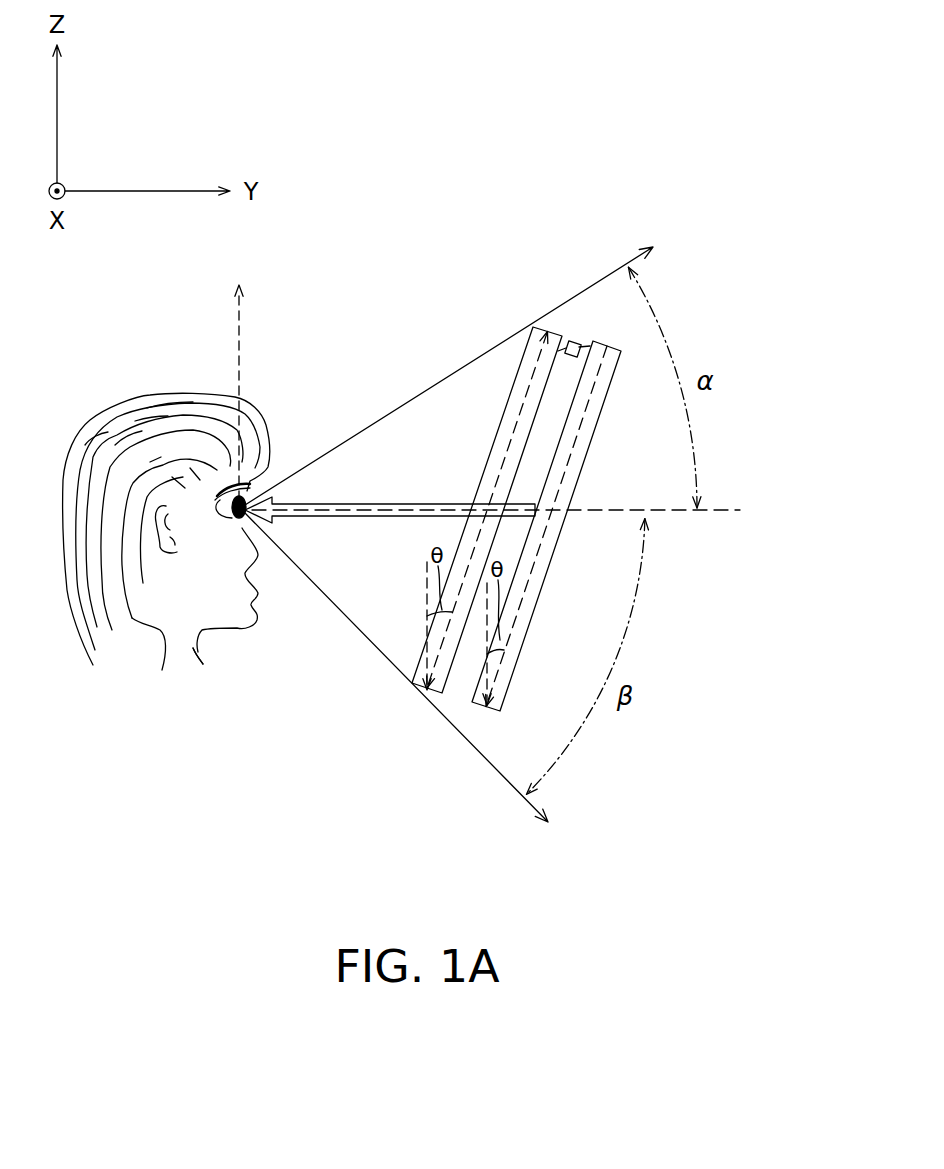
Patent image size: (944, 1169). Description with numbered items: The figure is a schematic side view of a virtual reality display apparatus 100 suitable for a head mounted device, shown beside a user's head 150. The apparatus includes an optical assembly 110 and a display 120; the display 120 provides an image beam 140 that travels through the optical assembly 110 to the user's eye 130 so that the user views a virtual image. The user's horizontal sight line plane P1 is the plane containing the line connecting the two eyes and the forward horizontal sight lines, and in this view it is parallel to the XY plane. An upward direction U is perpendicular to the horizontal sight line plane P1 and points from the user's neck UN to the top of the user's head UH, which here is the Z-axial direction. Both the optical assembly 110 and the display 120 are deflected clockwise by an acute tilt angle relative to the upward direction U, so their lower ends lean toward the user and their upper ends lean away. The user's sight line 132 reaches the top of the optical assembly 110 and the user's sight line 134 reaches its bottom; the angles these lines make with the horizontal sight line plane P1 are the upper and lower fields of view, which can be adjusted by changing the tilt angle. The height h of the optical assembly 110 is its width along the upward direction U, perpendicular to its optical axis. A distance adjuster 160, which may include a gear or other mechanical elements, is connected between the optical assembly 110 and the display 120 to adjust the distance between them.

The virtual reality display apparatus 100 is at (748, 881).
The optical assembly 110 is at (533, 345).
The display 120 is at (597, 409).
The user's eye 130 is at (247, 504).
The user's sight line 132 is at (590, 287).
The user's sight line 134 is at (495, 768).
The image beam 140 is at (405, 499).
The user's head 150 is at (227, 603).
The distance adjuster 160 is at (577, 345).
The top of the user's head UH is at (147, 388).
The user's neck UN is at (205, 648).
The upward direction U is at (239, 376).
The horizontal sight line plane P1 is at (515, 514).
The height of the optical assembly h is at (512, 438).